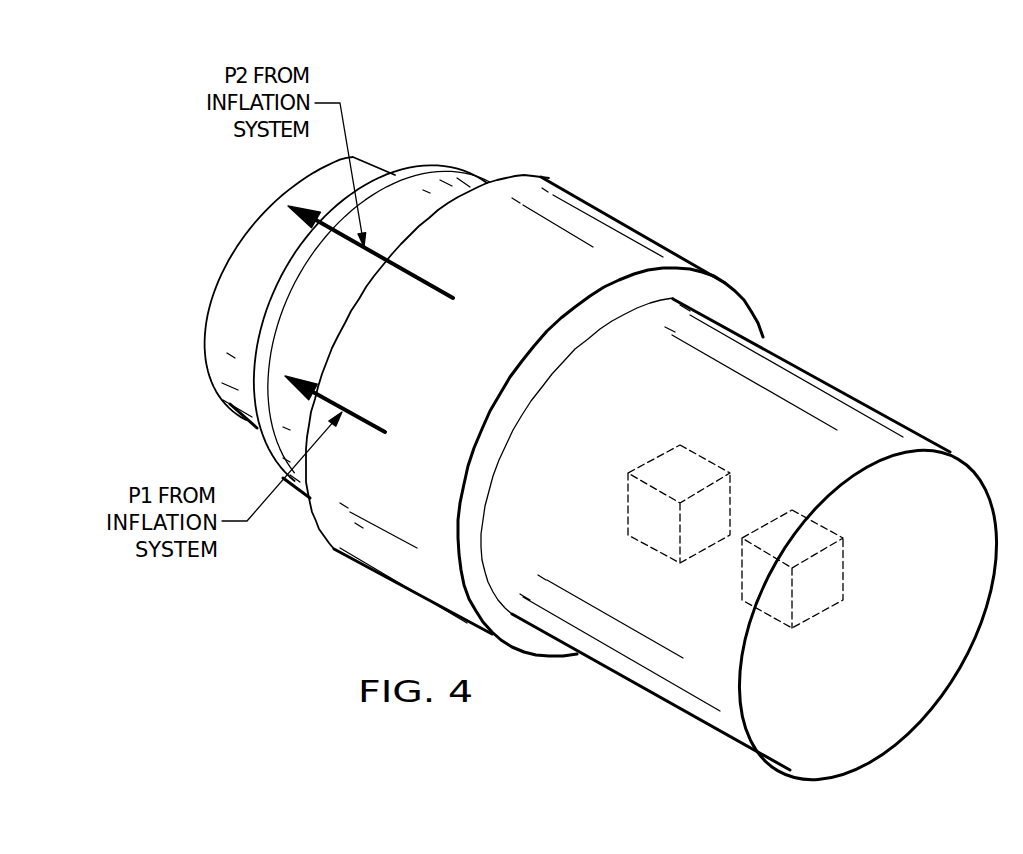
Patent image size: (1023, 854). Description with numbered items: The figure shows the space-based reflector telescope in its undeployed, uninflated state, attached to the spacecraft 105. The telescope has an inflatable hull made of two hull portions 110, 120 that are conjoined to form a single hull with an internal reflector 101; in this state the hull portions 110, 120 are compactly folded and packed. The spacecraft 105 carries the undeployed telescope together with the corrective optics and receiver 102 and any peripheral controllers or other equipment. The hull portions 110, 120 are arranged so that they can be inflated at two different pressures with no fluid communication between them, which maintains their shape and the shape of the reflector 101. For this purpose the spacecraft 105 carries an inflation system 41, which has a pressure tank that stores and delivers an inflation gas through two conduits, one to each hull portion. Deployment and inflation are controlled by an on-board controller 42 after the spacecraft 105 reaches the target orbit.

The hull portion 110 is at (205, 352).
The reflector 101 is at (305, 273).
The hull portion 120 is at (437, 187).
The corrective optics and receiver 102 is at (627, 221).
The spacecraft 105 is at (832, 380).
The on-board controller 42 is at (730, 503).
The inflation system 41 is at (843, 570).